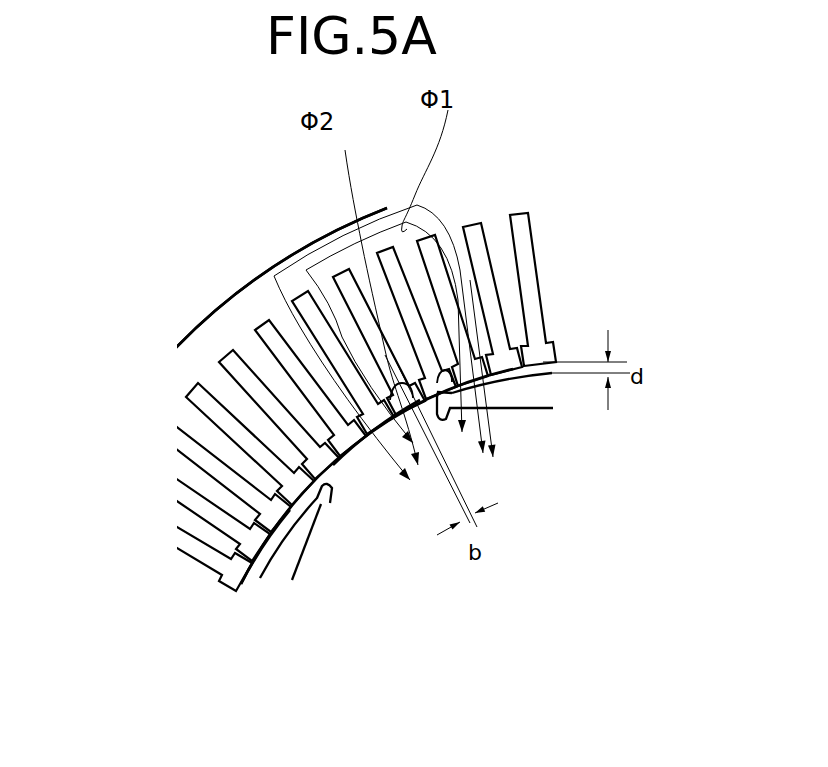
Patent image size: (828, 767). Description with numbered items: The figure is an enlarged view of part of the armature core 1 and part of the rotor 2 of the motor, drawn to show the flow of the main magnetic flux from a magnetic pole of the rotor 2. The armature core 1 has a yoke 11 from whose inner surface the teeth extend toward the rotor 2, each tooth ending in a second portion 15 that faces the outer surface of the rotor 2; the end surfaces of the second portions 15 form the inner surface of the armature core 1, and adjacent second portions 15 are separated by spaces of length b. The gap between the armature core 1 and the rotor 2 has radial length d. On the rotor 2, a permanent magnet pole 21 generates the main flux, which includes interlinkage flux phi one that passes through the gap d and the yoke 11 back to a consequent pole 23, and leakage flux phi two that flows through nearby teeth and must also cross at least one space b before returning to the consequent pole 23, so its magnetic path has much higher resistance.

The armature core 1 is at (228, 297).
The yoke 11 is at (268, 292).
The rotor 2 is at (340, 542).
The second portion 15 is at (247, 547).
The permanent magnet pole 21 is at (288, 550).
The consequent pole 23 is at (363, 450).